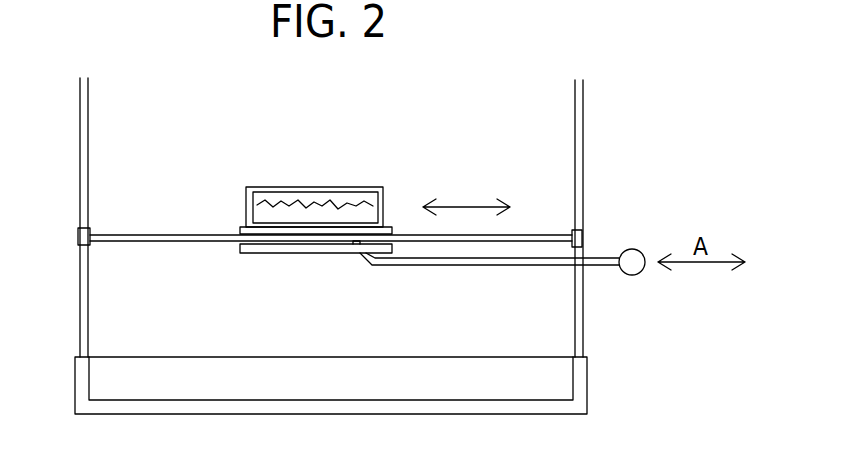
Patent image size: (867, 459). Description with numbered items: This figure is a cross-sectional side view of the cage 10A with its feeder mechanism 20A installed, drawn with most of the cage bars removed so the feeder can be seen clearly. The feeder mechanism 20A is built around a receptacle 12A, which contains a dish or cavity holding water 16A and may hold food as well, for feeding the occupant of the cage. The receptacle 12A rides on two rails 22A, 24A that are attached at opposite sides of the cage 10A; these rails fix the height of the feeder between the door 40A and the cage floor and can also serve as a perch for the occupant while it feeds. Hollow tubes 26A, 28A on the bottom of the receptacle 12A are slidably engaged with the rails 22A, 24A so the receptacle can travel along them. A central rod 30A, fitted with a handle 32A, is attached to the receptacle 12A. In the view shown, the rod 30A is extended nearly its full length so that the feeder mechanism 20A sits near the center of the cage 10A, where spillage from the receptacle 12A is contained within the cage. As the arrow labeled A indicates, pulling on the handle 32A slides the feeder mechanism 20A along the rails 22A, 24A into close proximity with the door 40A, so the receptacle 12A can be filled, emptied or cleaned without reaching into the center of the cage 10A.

The cage 10A is at (588, 98).
The door 40A is at (583, 182).
The receptacle 12A is at (246, 198).
The water 16A is at (325, 213).
The feeder mechanism 20A is at (327, 272).
The rail 22A is at (331, 217).
The rail 24A is at (102, 232).
The hollow tube 26A is at (261, 270).
The hollow tube 28A is at (257, 254).
The central rod 30A is at (503, 266).
The handle 32A is at (635, 276).